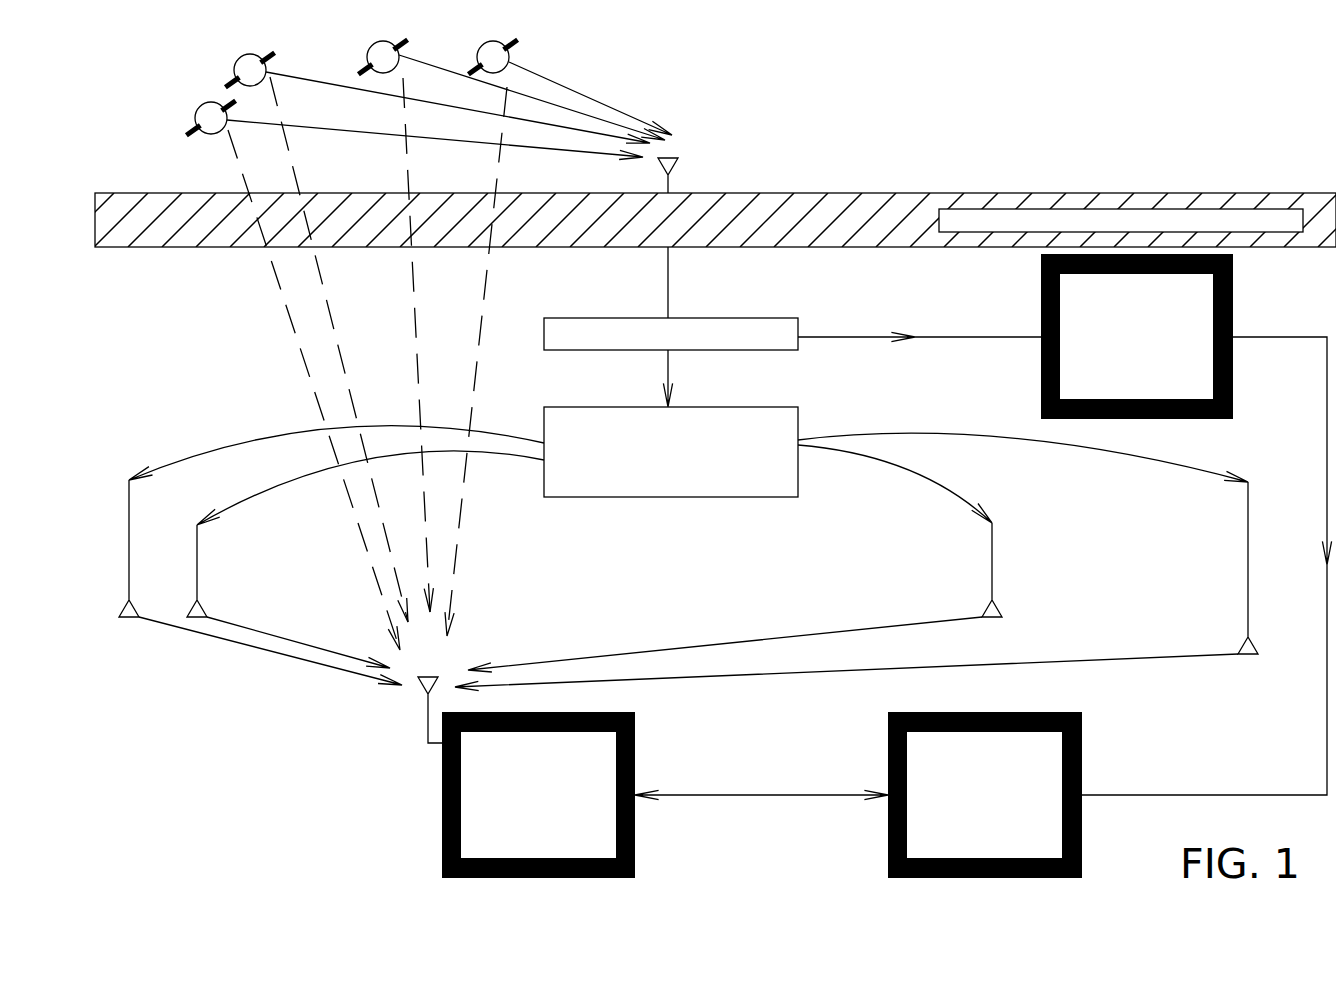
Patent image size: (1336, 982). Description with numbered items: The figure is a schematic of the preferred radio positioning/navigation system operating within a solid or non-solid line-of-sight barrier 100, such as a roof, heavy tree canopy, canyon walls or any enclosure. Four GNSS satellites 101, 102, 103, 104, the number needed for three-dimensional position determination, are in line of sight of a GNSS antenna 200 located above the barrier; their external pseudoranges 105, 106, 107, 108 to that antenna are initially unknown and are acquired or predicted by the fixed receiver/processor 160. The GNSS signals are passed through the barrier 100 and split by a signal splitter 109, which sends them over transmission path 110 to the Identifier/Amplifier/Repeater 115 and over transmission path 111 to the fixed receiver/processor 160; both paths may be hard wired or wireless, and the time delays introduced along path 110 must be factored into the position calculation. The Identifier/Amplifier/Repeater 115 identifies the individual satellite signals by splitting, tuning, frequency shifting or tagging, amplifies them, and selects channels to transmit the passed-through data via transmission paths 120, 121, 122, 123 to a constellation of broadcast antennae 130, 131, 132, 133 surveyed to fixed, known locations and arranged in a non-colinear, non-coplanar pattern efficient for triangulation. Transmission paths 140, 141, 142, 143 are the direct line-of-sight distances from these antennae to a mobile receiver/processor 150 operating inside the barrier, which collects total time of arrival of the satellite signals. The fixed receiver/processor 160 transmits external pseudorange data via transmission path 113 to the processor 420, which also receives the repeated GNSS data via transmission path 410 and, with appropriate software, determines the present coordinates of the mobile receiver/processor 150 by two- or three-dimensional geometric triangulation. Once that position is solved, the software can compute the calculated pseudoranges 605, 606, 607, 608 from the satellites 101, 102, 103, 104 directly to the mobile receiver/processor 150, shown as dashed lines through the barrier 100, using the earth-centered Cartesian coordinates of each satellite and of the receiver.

The line-of-sight barrier 100 is at (1183, 193).
The GNSS satellite 101 is at (195, 118).
The GNSS satellite 102 is at (234, 70).
The GNSS satellite 103 is at (367, 57).
The GNSS satellite 104 is at (477, 57).
The external pseudorange 105 is at (377, 132).
The external pseudorange 106 is at (369, 91).
The external pseudorange 107 is at (532, 92).
The external pseudorange 108 is at (593, 96).
The signal splitter 109 is at (785, 318).
The transmission path 110 is at (668, 372).
The transmission path 111 is at (955, 337).
The transmission path 113 is at (1327, 455).
The Identifier/Amplifier/Repeater 115 is at (785, 407).
The transmission path 120 is at (172, 461).
The transmission path 121 is at (240, 499).
The transmission path 122 is at (934, 485).
The transmission path 123 is at (1160, 463).
The broadcast antenna 130 is at (129, 581).
The broadcast antenna 131 is at (197, 581).
The broadcast antenna 132 is at (992, 571).
The broadcast antenna 133 is at (1248, 611).
The transmission path 140 is at (262, 649).
The transmission path 141 is at (280, 637).
The transmission path 142 is at (725, 642).
The transmission path 143 is at (790, 673).
The mobile receiver/processor 150 is at (442, 861).
The fixed receiver/processor 160 is at (1041, 405).
The GNSS antenna 200 is at (678, 166).
The transmission path 410 is at (787, 795).
The processor 420 is at (888, 858).
The calculated pseudorange 605 is at (302, 352).
The calculated pseudorange 606 is at (330, 315).
The calculated pseudorange 607 is at (414, 293).
The calculated pseudorange 608 is at (489, 262).